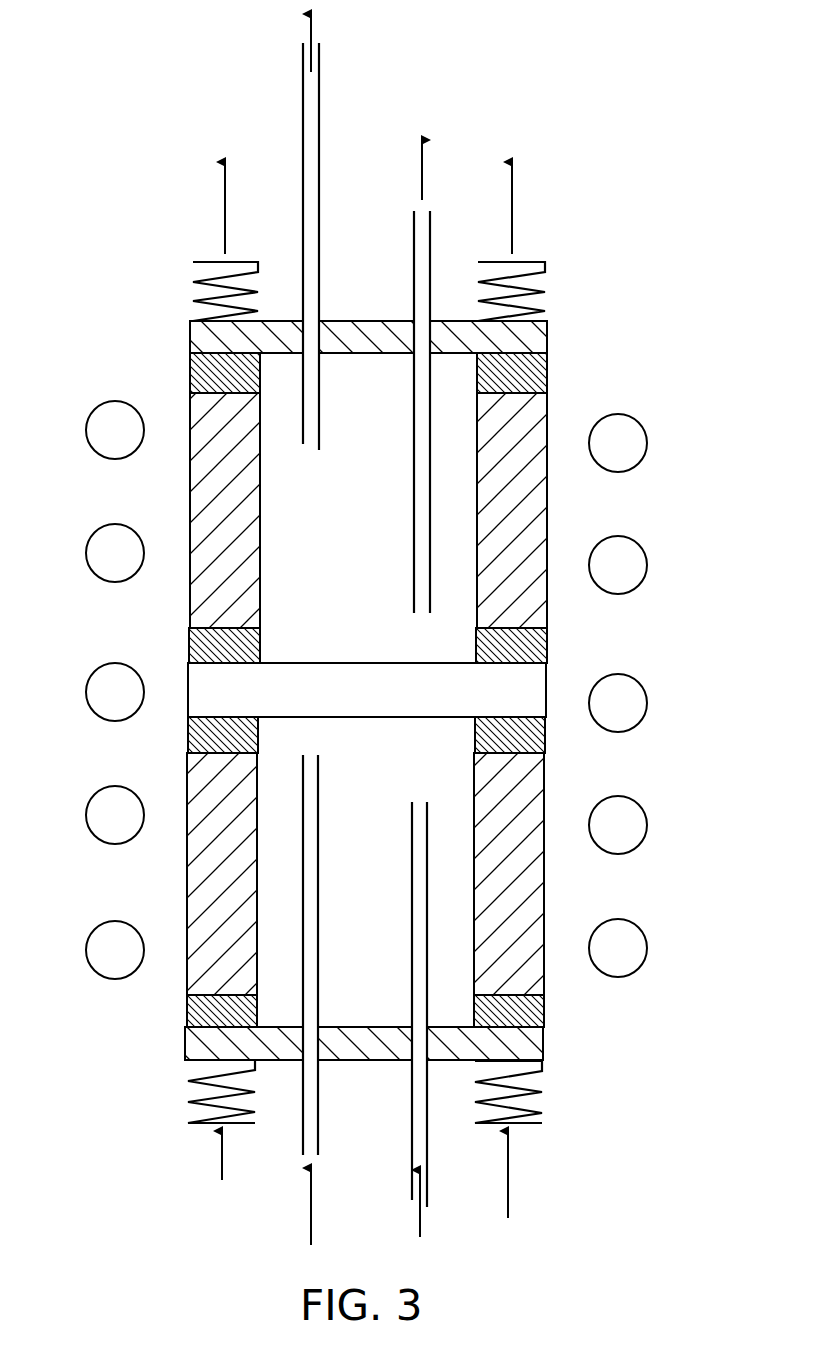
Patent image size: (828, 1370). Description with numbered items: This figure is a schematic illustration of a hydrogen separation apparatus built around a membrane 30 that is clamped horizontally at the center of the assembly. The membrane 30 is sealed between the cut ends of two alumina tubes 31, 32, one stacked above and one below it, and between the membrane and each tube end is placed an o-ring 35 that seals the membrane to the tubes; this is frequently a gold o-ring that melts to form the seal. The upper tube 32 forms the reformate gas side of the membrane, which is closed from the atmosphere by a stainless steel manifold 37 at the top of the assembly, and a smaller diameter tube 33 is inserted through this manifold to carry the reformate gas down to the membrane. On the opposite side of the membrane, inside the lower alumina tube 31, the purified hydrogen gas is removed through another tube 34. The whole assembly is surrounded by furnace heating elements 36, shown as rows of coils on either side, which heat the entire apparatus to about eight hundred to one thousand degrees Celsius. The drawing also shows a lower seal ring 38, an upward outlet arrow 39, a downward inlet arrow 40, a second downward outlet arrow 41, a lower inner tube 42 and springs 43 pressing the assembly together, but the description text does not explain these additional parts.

The membrane 30 is at (188, 690).
The alumina tube 31 is at (187, 878).
The alumina tube 32 is at (190, 488).
The smaller diameter tube 33 is at (413, 225).
The tube 34 is at (412, 1120).
The o-ring 35 is at (189, 650).
The furnace heating elements 36 is at (638, 583).
The stainless steel manifold 37 is at (365, 353).
The upper seal ring 38 is at (547, 372).
The outlet flow 39 is at (312, 1218).
The inlet flow 40 is at (424, 153).
The lower outlet flow 41 is at (420, 1215).
The lower inner tube 42 is at (412, 898).
The spring 43 is at (543, 1095).